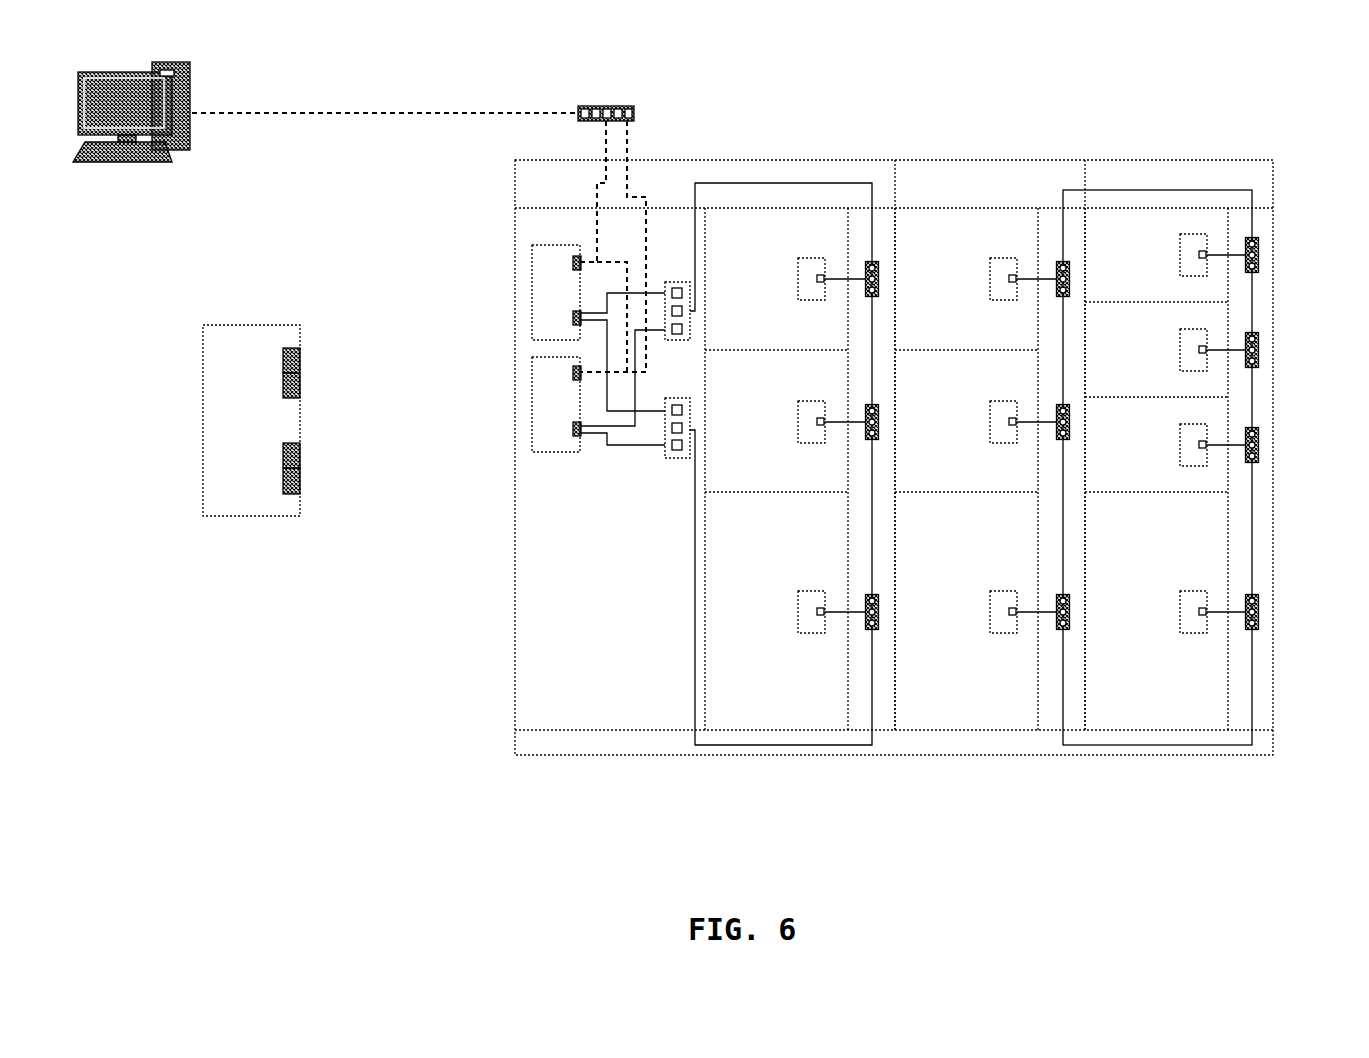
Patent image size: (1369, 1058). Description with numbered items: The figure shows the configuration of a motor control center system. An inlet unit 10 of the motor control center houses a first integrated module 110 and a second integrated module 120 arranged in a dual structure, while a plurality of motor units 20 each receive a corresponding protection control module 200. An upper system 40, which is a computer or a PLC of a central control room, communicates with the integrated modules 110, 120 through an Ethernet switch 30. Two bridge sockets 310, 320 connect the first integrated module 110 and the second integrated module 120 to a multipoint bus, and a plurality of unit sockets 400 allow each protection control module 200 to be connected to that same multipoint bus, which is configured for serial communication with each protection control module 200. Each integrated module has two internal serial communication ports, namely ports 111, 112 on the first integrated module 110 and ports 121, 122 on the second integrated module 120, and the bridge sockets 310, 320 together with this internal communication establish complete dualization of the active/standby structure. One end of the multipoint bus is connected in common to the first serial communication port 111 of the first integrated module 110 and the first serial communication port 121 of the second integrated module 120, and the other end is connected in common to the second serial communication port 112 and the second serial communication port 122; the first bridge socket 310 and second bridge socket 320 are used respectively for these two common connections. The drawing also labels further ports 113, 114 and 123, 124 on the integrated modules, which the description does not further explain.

The inlet unit 10 is at (608, 696).
The motor unit 20 is at (1142, 696).
The Ethernet switch 30 is at (636, 112).
The upper system 40 is at (182, 72).
The first integrated module 110 is at (532, 291).
The second integrated module 120 is at (532, 409).
The first serial communication port 111 is at (354, 454).
The second serial communication port 112 is at (354, 481).
The third port of first control device 113 is at (354, 360).
The fourth port of first control device 114 is at (354, 385).
The first serial communication port 121 is at (301, 452).
The second serial communication port 122 is at (301, 480).
The third port of second control device 123 is at (301, 358).
The fourth port of second control device 124 is at (301, 385).
The protection control module 200 is at (1008, 460).
The first bridge socket 310 is at (681, 282).
The second bridge socket 320 is at (678, 458).
The unit socket 400 is at (1100, 427).